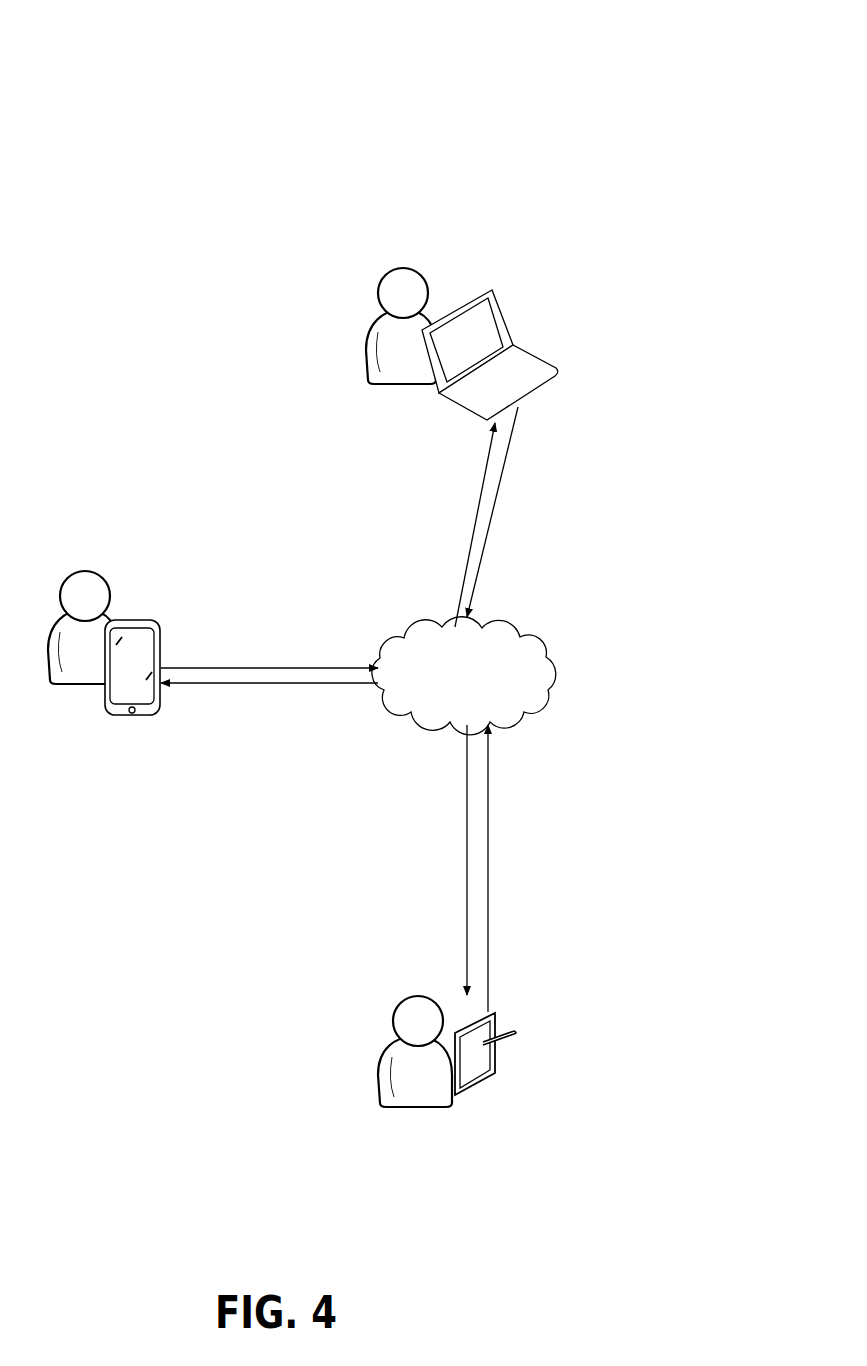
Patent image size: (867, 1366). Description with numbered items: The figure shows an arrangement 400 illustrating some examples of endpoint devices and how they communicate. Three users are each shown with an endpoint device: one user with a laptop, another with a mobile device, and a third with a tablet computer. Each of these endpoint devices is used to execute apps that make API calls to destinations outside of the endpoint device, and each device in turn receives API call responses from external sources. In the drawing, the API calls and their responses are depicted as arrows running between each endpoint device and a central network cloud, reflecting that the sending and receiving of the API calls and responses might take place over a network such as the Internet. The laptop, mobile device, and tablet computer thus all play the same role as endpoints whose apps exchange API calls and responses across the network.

The system 400 is at (660, 74).